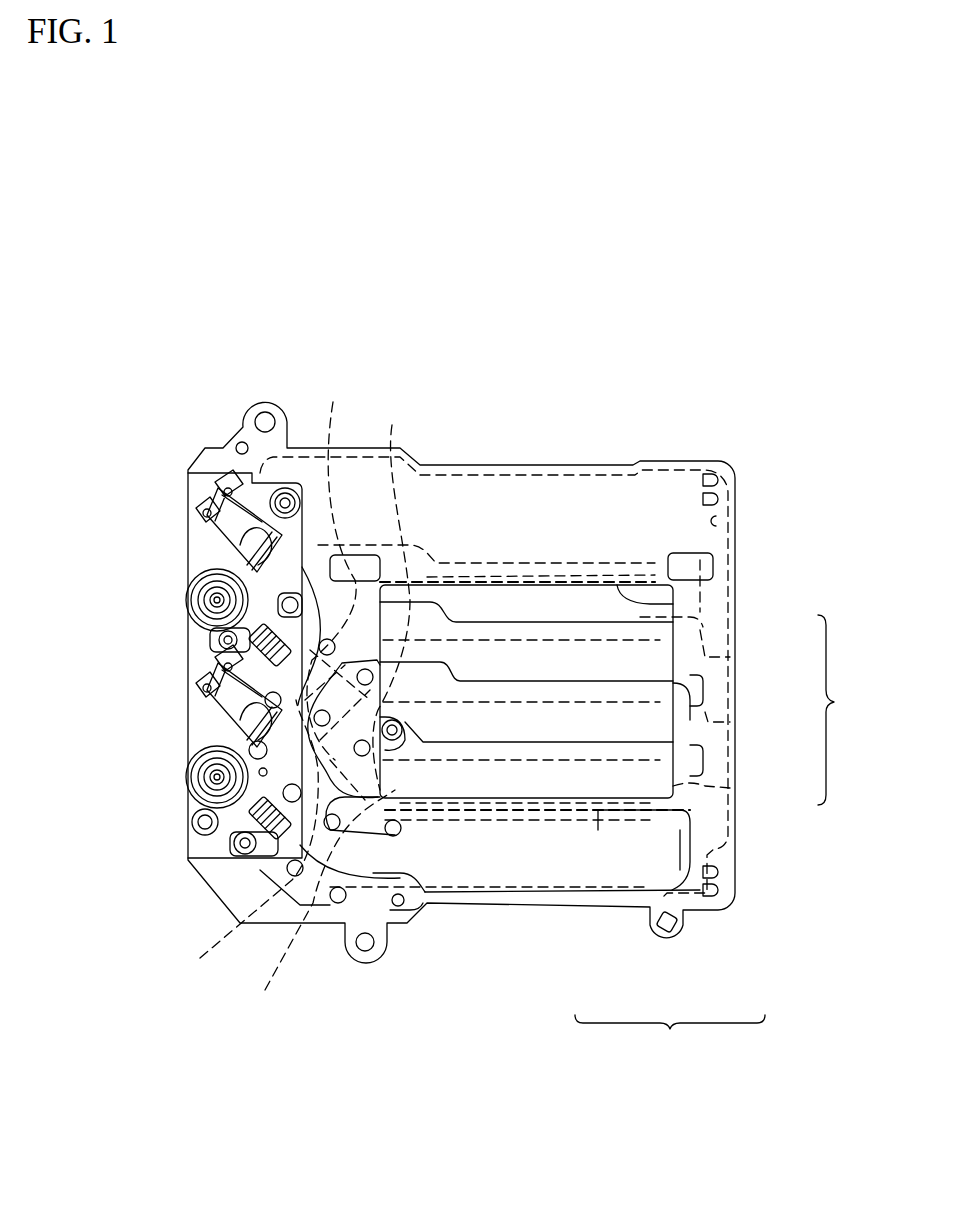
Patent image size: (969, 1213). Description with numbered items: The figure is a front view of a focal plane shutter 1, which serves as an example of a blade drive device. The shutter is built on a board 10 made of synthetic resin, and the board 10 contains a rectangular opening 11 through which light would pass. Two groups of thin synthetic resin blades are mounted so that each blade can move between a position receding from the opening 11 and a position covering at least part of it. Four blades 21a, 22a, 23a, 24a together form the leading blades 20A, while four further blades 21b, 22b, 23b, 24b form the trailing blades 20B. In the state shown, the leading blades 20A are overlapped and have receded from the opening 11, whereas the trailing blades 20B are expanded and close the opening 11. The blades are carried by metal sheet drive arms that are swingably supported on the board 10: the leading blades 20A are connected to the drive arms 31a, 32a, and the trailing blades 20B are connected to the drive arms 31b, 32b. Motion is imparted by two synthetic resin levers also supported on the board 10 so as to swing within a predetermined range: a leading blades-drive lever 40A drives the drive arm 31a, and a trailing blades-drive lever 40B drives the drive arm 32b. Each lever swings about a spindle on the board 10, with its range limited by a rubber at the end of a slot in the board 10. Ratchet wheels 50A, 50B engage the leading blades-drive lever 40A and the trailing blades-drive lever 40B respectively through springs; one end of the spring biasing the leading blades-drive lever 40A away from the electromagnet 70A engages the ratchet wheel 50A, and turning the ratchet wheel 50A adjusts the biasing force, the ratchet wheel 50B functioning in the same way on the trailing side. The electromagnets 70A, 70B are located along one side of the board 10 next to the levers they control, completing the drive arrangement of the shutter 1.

The focal plane shutter 1 is at (465, 684).
The board 10 is at (510, 682).
The opening 11 is at (590, 676).
The leading blades 20A is at (551, 821).
The trailing blades 20B is at (596, 677).
The blade 21a is at (510, 910).
The blade 22a is at (527, 915).
The blade 23a is at (555, 910).
The blade 24a is at (576, 796).
The blade 21b is at (597, 784).
The blade 22b is at (597, 739).
The blade 23b is at (597, 668).
The blade 24b is at (565, 597).
The drive arm 31a is at (316, 909).
The drive arm 31b is at (398, 592).
The drive arm 32a is at (237, 840).
The drive arm 32b is at (334, 566).
The leading blades-drive lever 40A is at (198, 832).
The trailing blades-drive lever 40B is at (184, 699).
The ratchet wheel 50A is at (159, 790).
The ratchet wheel 50B is at (186, 559).
The electromagnet 70A is at (169, 696).
The electromagnet 70B is at (173, 521).